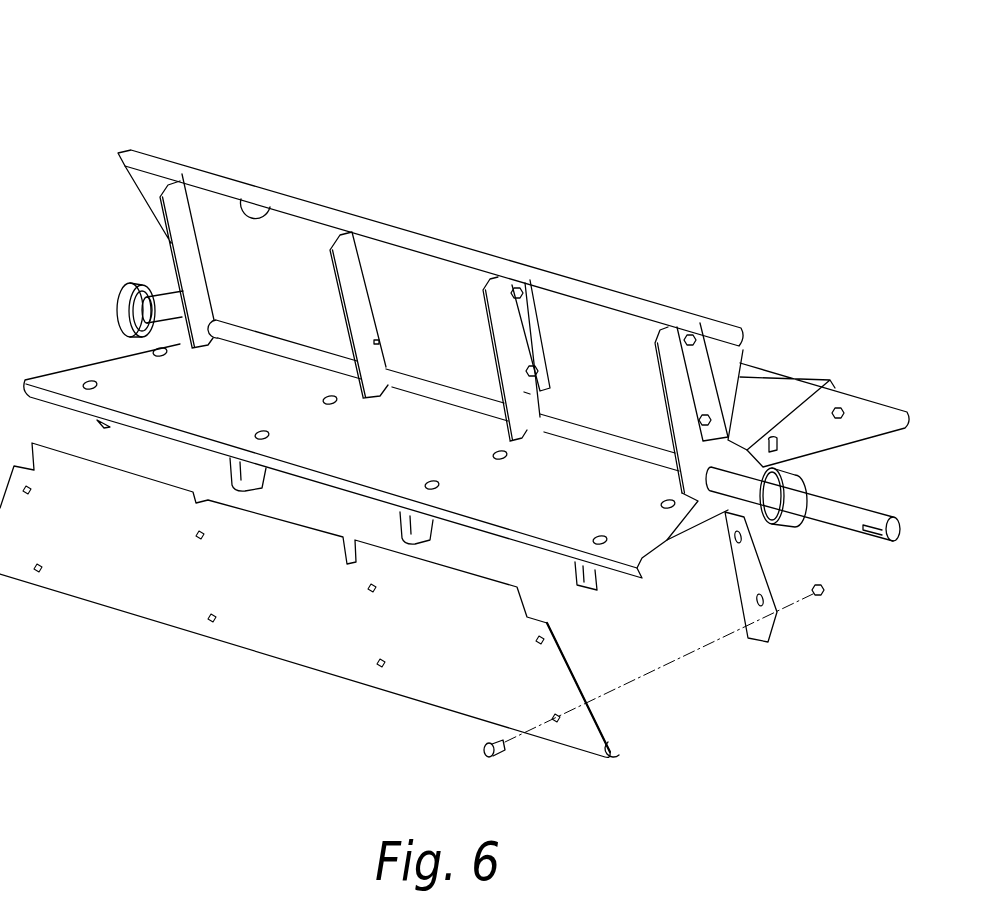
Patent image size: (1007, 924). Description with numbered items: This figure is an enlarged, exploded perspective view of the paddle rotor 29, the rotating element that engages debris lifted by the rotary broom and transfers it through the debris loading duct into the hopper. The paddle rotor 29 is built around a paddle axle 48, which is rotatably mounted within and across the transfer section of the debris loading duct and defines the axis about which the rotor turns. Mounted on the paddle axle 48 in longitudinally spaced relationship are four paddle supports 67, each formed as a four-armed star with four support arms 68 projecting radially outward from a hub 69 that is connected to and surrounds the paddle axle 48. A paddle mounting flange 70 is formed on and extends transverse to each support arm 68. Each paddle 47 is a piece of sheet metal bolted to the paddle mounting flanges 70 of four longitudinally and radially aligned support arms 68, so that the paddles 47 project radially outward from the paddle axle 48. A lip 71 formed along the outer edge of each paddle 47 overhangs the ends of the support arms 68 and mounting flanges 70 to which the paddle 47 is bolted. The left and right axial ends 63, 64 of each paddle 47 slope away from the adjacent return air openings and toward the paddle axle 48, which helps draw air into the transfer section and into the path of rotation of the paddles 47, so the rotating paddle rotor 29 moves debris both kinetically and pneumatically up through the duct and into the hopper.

The paddle rotor 29 is at (160, 86).
The paddle 47 is at (583, 327).
The paddle axle 48 is at (827, 521).
The left axial end 63 is at (688, 514).
The right axial end 64 is at (133, 347).
The paddle support 67 is at (198, 307).
The support arm 68 is at (660, 374).
The hub 69 is at (728, 514).
The paddle mounting flange 70 is at (545, 350).
The lip 71 is at (244, 200).